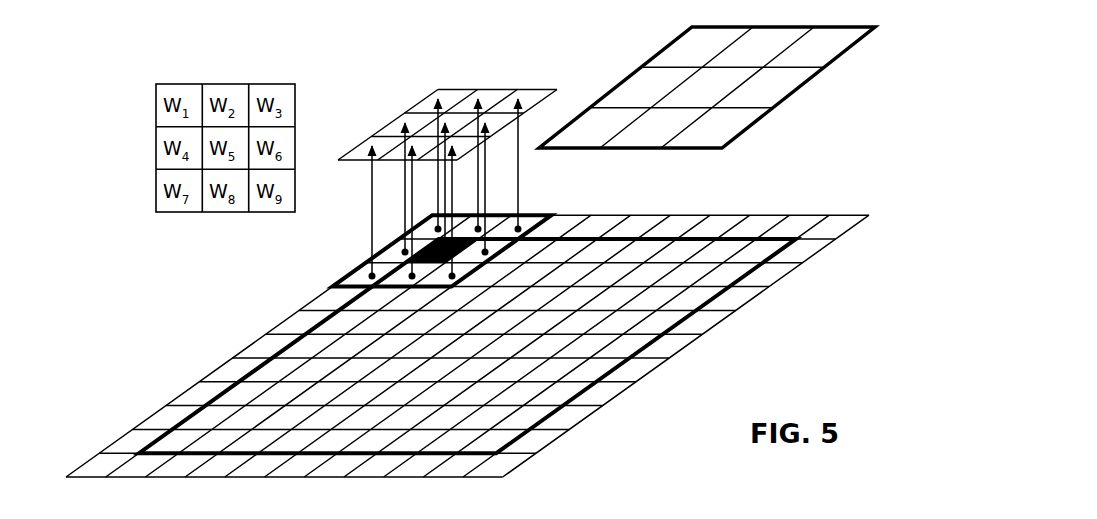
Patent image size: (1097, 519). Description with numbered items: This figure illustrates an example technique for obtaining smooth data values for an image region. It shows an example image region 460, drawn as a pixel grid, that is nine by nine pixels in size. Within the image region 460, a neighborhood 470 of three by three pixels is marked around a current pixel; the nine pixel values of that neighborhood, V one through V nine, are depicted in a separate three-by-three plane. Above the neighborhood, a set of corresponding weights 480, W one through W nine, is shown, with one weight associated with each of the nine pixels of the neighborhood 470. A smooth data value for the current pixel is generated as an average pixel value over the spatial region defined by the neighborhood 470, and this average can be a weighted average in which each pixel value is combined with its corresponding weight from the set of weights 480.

The image region 460 is at (668, 240).
The neighborhood 470 is at (687, 150).
The set of corresponding weights 480 is at (458, 90).